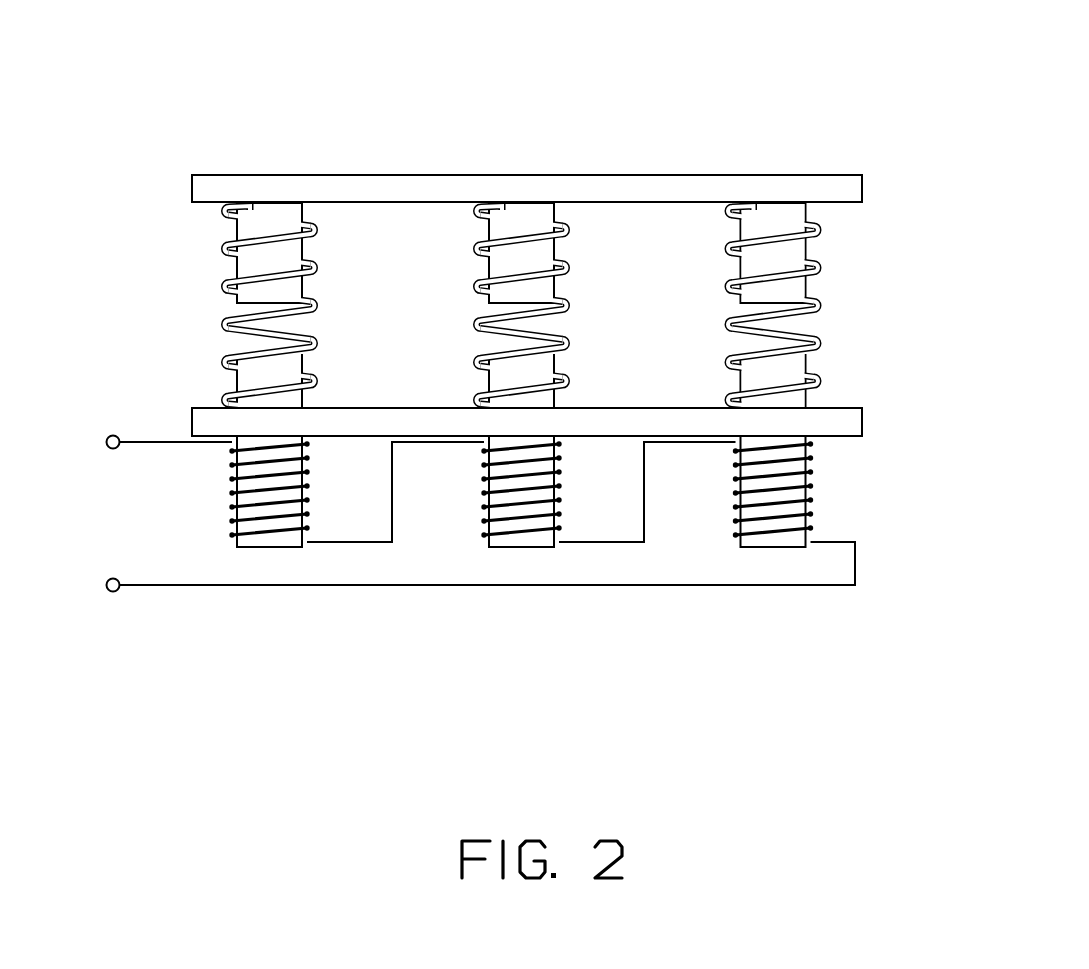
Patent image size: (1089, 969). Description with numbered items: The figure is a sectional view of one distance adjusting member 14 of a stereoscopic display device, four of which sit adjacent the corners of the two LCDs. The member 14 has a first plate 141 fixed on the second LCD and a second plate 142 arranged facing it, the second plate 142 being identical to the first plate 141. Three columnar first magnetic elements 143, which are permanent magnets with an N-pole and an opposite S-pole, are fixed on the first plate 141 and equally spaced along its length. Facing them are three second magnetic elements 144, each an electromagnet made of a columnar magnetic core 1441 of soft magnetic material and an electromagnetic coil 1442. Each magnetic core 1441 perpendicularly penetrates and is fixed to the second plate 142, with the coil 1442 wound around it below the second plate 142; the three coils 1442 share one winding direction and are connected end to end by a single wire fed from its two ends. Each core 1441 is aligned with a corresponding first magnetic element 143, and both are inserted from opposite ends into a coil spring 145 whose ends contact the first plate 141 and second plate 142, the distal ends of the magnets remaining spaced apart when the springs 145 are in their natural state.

The distance adjusting member 14 is at (404, 49).
The first plate 141 is at (243, 185).
The second plate 142 is at (203, 426).
The first magnetic element 143 is at (788, 259).
The second magnetic element 144 is at (652, 450).
The magnetic core 1441 is at (783, 368).
The electromagnetic coil 1442 is at (808, 471).
The coil spring 145 is at (813, 307).